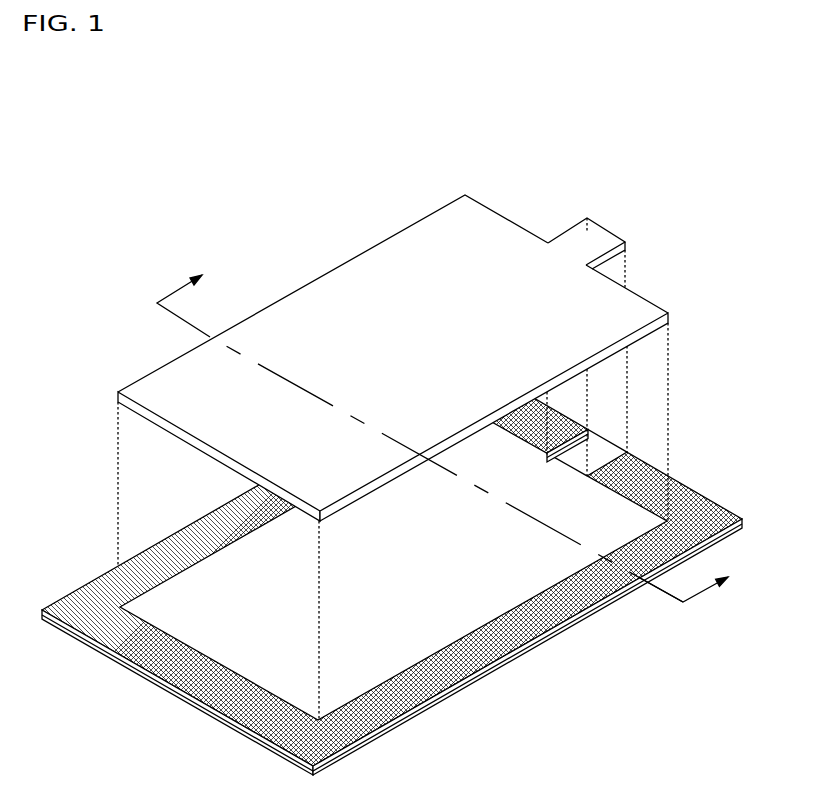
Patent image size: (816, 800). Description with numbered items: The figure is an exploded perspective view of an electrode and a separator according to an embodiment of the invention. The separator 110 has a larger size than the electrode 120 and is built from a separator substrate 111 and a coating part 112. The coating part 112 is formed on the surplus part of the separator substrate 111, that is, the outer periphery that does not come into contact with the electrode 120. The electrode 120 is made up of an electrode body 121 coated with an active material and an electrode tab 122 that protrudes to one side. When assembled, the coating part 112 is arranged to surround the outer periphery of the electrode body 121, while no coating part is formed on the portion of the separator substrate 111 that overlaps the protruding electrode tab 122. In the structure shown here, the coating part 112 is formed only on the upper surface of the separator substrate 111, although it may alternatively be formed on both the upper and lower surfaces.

The separator 110 is at (408, 569).
The separator substrate 111 is at (444, 702).
The coating part 112 is at (468, 655).
The electrode 120 is at (393, 308).
The electrode body 121 is at (502, 258).
The electrode tab 122 is at (532, 141).